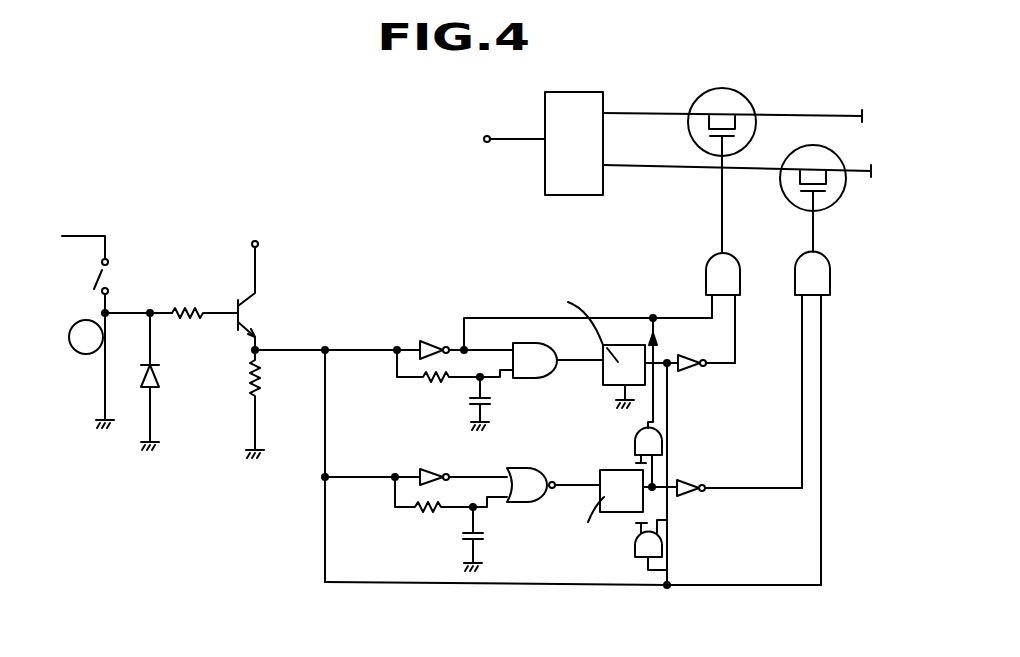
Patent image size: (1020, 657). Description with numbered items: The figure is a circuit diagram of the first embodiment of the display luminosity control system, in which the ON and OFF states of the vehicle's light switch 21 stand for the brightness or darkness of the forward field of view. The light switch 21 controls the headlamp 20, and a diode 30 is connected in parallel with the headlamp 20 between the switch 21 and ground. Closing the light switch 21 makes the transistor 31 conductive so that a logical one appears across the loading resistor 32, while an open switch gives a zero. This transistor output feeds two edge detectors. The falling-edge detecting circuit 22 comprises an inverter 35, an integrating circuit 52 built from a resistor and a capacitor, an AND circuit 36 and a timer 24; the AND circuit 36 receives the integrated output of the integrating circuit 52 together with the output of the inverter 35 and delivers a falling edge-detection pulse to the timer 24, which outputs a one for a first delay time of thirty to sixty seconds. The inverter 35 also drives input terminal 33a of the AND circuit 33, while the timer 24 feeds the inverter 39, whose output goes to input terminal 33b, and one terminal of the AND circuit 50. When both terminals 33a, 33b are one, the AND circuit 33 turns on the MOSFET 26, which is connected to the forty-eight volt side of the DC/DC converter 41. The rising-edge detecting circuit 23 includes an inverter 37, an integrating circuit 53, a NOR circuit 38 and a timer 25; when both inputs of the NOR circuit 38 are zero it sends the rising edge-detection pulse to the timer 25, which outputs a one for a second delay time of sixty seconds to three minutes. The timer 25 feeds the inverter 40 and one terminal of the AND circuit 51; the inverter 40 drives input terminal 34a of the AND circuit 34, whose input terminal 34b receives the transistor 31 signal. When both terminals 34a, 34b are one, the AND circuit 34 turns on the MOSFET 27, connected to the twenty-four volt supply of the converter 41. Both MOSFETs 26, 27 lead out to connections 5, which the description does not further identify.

The relay line 5 is at (737, 131).
The headlamp 20 is at (78, 355).
The light switch 21 is at (95, 283).
The falling-edge detecting circuit 22 is at (564, 355).
The rising-edge detecting circuit 23 is at (563, 440).
The timer 24 is at (617, 345).
The timer 25 is at (612, 470).
The MOSFET 26 is at (712, 93).
The MOSFET 27 is at (803, 150).
The diode 30 is at (160, 378).
The transistor 31 is at (238, 300).
The loading resistor 32 is at (262, 378).
The AND circuit 33 is at (715, 299).
The input terminal 33a is at (706, 296).
The input terminal 33b is at (740, 298).
The AND circuit 34 is at (815, 407).
The input terminal 34a is at (797, 298).
The input terminal 34b is at (826, 298).
The inverter 35 is at (430, 340).
The AND circuit 36 is at (548, 380).
The inverter 37 is at (420, 467).
The NOR circuit 38 is at (541, 504).
The inverter 39 is at (692, 374).
The inverter 40 is at (690, 498).
The DC/DC converter 41 is at (581, 90).
The AND circuit 50 is at (635, 547).
The AND circuit 51 is at (662, 440).
The integrating circuit 52 is at (448, 402).
The integrating circuit 53 is at (442, 534).